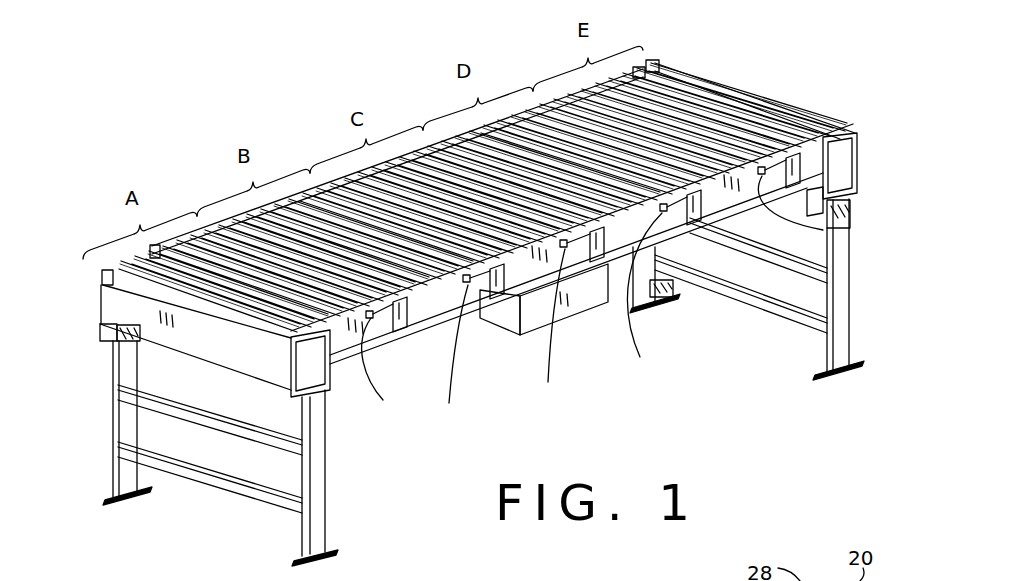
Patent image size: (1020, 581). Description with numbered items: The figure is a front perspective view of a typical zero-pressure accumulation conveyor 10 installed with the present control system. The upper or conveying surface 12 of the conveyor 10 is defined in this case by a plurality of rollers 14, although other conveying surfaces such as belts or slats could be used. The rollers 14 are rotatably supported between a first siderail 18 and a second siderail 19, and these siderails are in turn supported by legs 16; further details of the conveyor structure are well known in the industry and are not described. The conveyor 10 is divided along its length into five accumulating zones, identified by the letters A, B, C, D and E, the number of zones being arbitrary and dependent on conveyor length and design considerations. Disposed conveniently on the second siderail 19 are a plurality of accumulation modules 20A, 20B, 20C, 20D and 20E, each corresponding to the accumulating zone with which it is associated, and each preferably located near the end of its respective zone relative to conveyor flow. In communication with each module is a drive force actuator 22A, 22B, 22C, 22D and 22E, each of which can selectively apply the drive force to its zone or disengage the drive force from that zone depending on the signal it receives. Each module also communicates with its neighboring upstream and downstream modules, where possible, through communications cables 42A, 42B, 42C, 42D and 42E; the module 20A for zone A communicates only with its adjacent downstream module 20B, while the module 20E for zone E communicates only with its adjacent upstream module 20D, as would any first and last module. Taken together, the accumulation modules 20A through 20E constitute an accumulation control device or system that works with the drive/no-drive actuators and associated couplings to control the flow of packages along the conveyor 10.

The zero-pressure accumulation conveyor 10 is at (283, 112).
The conveying surface 12 is at (778, 95).
The rollers 14 is at (140, 300).
The legs 16 is at (838, 349).
The first siderail 18 is at (617, 78).
The second siderail 19 is at (780, 153).
The accumulation module 20A is at (406, 332).
The accumulation module 20B is at (497, 298).
The accumulation module 20C is at (600, 260).
The accumulation module 20D is at (698, 224).
The accumulation module 20E is at (798, 166).
The drive force actuator 22A is at (367, 320).
The drive force actuator 22B is at (465, 285).
The drive force actuator 22C is at (567, 250).
The drive force actuator 22D is at (667, 214).
The drive force actuator 22E is at (768, 172).
The communications cable 42A is at (386, 374).
The communications cable 42B is at (448, 355).
The communications cable 42C is at (552, 326).
The communications cable 42D is at (652, 295).
The communications cable 42E is at (823, 230).